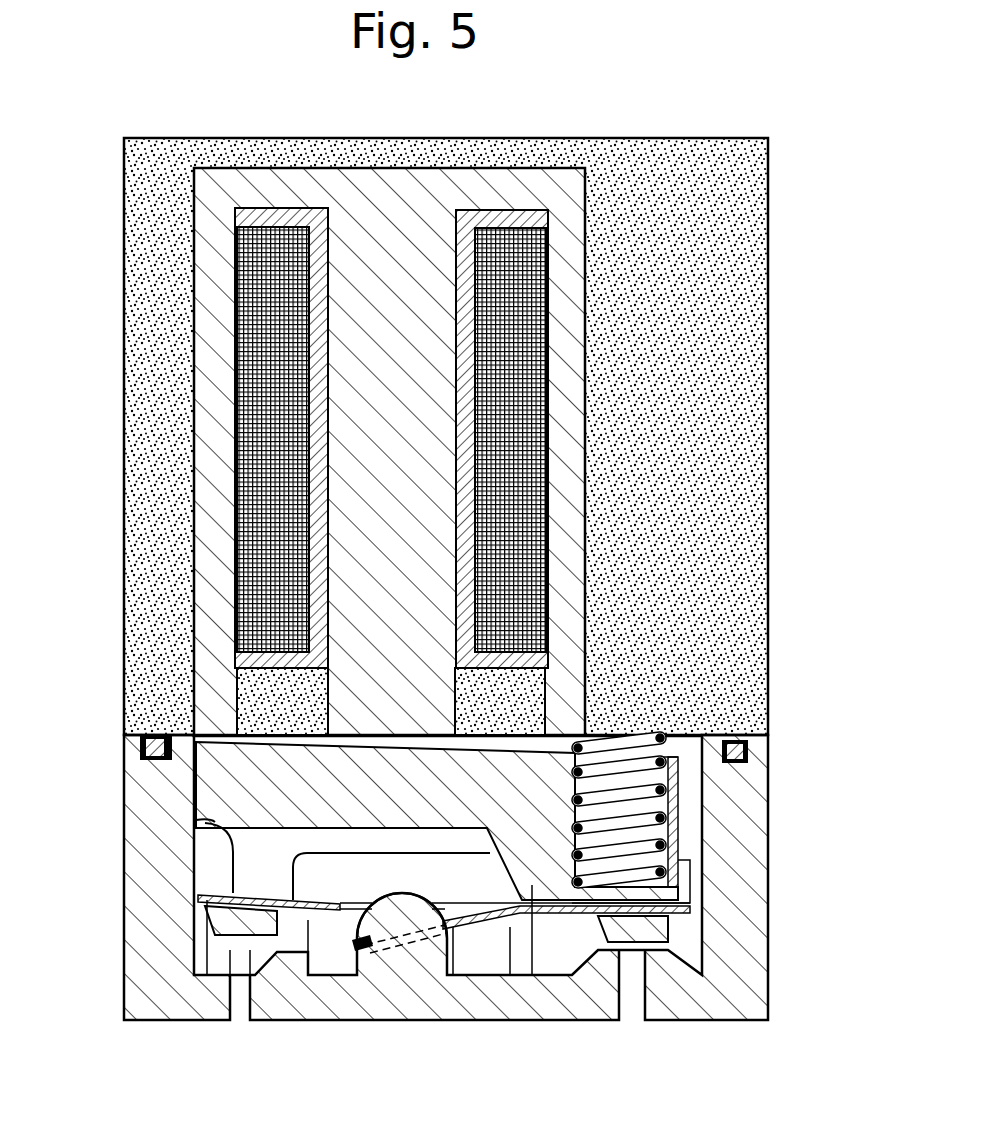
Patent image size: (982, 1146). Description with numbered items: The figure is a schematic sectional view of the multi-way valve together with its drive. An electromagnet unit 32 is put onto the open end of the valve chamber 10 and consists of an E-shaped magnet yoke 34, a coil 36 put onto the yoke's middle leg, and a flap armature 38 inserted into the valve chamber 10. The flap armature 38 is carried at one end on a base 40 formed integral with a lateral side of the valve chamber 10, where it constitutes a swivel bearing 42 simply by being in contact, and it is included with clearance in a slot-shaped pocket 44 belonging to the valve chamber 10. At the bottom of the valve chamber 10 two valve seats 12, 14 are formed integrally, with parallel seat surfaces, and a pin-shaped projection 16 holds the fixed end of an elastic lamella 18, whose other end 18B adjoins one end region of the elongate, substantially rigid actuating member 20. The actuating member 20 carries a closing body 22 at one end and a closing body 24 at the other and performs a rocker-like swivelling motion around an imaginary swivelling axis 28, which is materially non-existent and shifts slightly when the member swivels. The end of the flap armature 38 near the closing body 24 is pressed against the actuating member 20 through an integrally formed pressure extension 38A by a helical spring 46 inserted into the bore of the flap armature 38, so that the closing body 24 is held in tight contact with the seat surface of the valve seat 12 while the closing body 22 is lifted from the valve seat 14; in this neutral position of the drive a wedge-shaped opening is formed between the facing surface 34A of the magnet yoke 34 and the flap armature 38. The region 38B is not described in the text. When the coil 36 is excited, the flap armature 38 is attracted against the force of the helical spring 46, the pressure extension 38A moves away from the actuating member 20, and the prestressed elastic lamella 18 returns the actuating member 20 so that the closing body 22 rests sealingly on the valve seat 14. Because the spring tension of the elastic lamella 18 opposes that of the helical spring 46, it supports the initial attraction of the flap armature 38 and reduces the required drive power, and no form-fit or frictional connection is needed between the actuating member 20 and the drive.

The valve chamber 10 is at (140, 940).
The valve seat 12 is at (630, 945).
The valve seat 14 is at (223, 960).
The pin-shaped projection 16 is at (398, 912).
The elastic lamella 18 is at (456, 925).
The other end of elastic lamella 18B is at (567, 975).
The actuating member 20 is at (308, 920).
The closing body 22 is at (205, 1018).
The closing body 24 is at (668, 935).
The imaginary swivelling axis 28 is at (532, 975).
The electromagnet unit 32 is at (437, 168).
The E-shaped magnet yoke 34 is at (430, 428).
The surface of magnet yoke 34A is at (397, 733).
The coil 36 is at (530, 330).
The flap armature 38 is at (198, 780).
The pressure extension 38A is at (637, 900).
The spring cup 38B is at (512, 745).
The base 40 is at (200, 856).
The swivel bearing 42 is at (210, 822).
The slot-shaped pocket 44 is at (248, 877).
The helical spring 46 is at (653, 752).